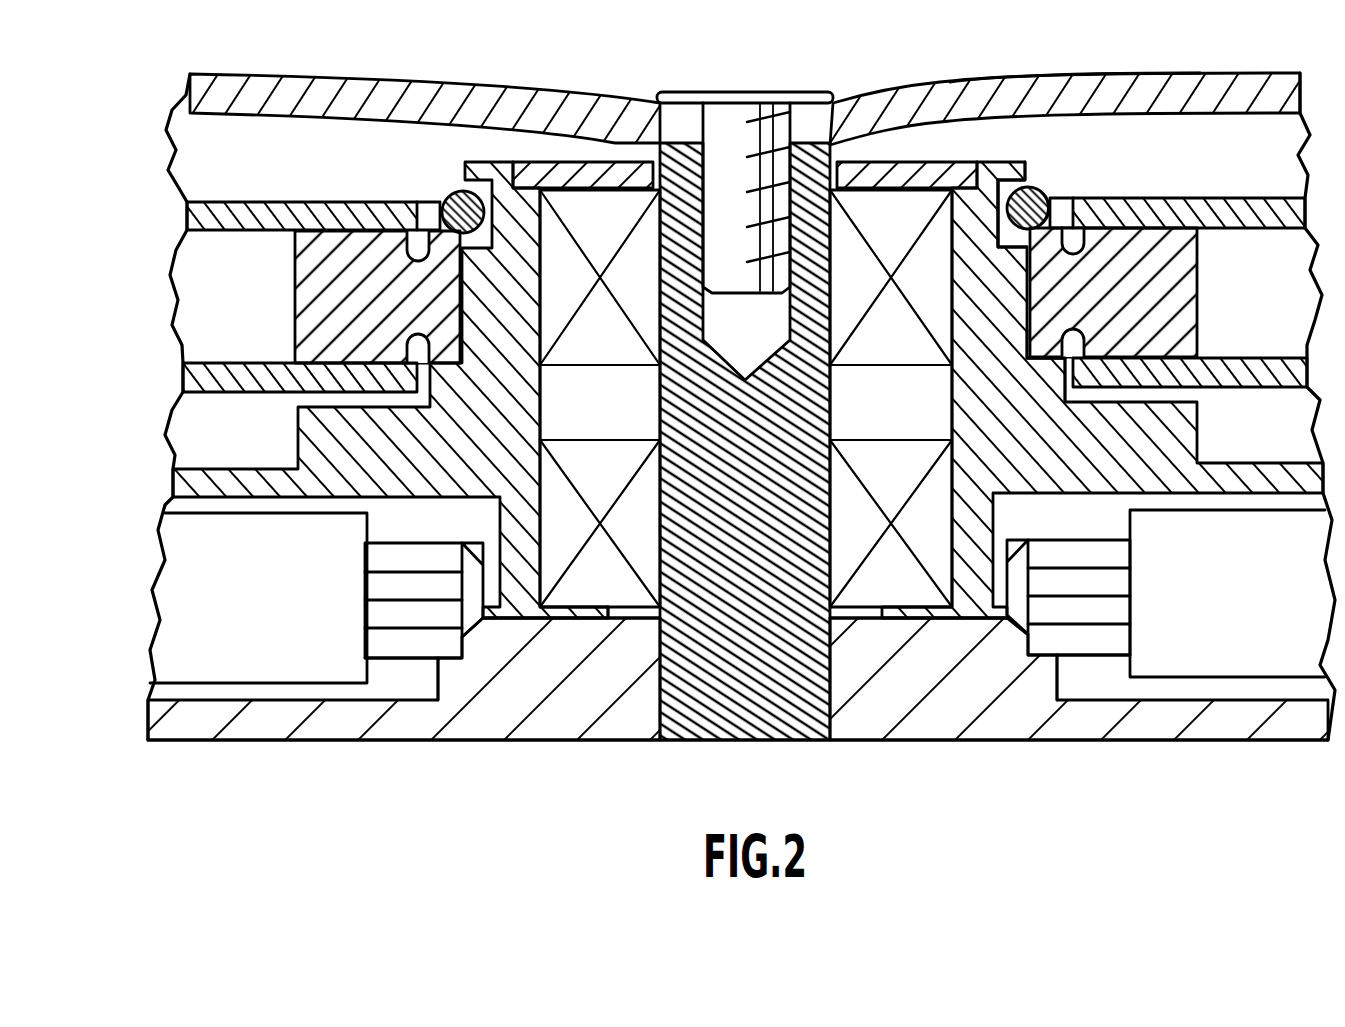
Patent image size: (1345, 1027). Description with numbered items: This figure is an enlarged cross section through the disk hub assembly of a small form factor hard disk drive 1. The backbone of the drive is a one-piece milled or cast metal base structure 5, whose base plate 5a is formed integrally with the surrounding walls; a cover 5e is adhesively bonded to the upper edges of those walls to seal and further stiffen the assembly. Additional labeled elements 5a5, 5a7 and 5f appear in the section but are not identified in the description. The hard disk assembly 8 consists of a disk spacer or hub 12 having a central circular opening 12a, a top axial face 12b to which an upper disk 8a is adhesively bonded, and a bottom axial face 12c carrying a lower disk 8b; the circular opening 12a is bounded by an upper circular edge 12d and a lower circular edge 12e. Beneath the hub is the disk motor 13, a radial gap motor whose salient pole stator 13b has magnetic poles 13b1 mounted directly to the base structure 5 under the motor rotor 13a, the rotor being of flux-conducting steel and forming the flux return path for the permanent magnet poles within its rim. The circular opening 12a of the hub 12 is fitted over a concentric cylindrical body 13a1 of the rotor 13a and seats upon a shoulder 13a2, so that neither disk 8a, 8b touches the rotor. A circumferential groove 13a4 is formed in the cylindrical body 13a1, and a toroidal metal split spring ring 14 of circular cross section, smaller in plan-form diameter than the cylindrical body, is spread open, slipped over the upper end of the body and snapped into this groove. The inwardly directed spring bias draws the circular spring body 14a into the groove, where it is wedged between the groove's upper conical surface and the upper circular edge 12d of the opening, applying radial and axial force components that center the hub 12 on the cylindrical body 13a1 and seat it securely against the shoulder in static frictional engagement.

The hard disk drive 1 is at (284, 130).
The base structure 5 is at (738, 694).
The base plate 5a is at (548, 716).
The central boss 5a5 is at (750, 716).
The bobbin seating step 5a7 is at (611, 596).
The cover 5e is at (947, 86).
The fixing screw 5f is at (757, 92).
The hard disk assembly 8 is at (285, 270).
The disk 8a is at (192, 240).
The disk 8b is at (200, 360).
The disk hub 12 is at (1086, 278).
The central circular opening 12a is at (1037, 276).
The top axial face 12b is at (1179, 198).
The bottom axial face 12c is at (1250, 388).
The upper circular edge 12d is at (1003, 232).
The lower circular edge 12e is at (1045, 368).
The disk motor 13 is at (706, 456).
The motor rotor 13a is at (748, 369).
The cylindrical body 13a1 is at (1030, 182).
The shoulder 13a2 is at (1047, 360).
The circumferential groove 13a4 is at (457, 192).
The salient pole stator 13b is at (706, 651).
The magnetic poles 13b1 is at (1087, 640).
The split spring ring 14 is at (1068, 174).
The circular spring body 14a is at (1048, 196).